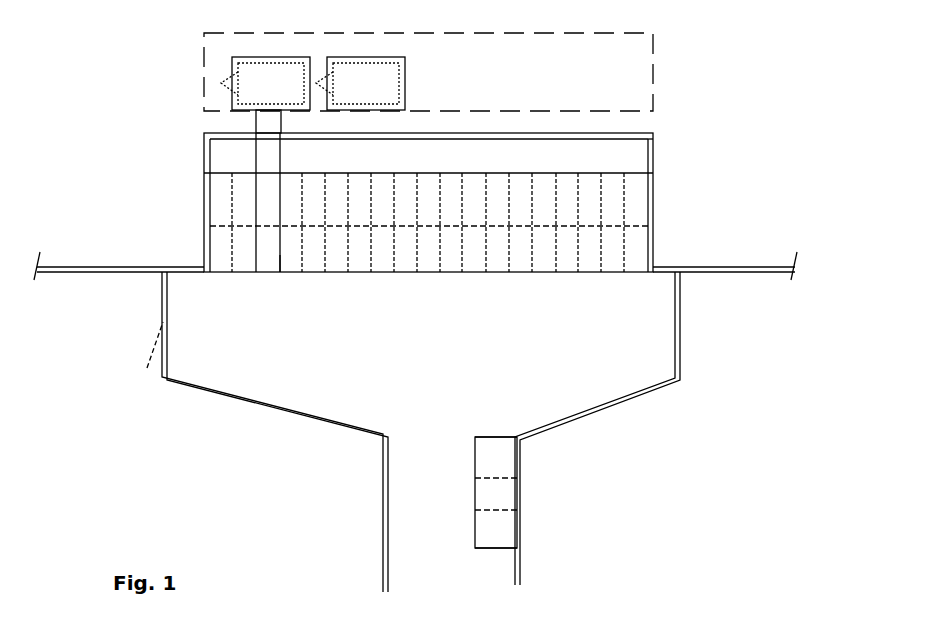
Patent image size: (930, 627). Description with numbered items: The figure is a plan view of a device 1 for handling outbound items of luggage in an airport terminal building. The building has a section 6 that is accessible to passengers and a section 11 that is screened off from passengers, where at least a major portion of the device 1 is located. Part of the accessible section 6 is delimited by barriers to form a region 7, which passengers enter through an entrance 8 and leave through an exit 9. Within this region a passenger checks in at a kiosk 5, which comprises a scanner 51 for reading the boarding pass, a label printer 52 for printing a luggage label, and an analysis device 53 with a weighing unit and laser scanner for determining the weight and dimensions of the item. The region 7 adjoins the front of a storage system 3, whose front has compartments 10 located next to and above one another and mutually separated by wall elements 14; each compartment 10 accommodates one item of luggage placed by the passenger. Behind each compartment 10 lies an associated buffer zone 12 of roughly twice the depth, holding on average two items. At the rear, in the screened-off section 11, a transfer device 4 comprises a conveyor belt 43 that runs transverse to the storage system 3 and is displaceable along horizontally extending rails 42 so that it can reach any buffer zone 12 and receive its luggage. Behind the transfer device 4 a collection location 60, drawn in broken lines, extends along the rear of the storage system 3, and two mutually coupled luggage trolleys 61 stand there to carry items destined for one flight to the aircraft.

The device 1 is at (752, 79).
The storage system 3 is at (682, 218).
The transfer device 4 is at (242, 151).
The kiosk 5 is at (534, 501).
The section accessible to passengers 6 is at (99, 495).
The region 7 is at (446, 372).
The entrance 8 is at (446, 572).
The exit 9 is at (149, 380).
The compartment 10 is at (278, 252).
The section screened off from passengers 11 is at (65, 50).
The buffer zone 12 is at (278, 200).
The wall element 14 is at (289, 272).
The rail 42 is at (645, 150).
The conveyor belt 43 is at (272, 121).
The scanner 51 is at (507, 531).
The label printer 52 is at (507, 488).
The analysis device 53 is at (507, 457).
The collection location 60 is at (555, 88).
The luggage trolley 61 is at (285, 95).